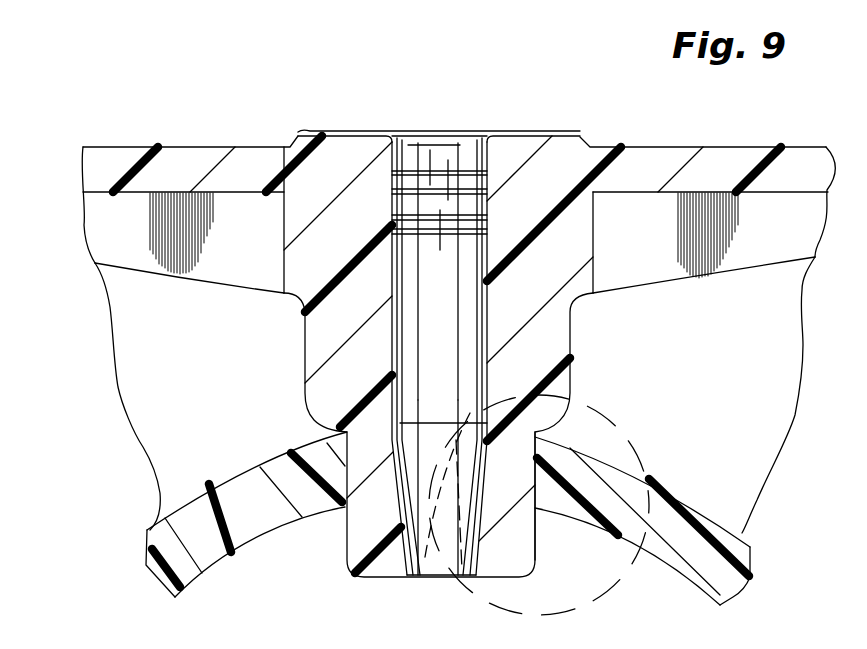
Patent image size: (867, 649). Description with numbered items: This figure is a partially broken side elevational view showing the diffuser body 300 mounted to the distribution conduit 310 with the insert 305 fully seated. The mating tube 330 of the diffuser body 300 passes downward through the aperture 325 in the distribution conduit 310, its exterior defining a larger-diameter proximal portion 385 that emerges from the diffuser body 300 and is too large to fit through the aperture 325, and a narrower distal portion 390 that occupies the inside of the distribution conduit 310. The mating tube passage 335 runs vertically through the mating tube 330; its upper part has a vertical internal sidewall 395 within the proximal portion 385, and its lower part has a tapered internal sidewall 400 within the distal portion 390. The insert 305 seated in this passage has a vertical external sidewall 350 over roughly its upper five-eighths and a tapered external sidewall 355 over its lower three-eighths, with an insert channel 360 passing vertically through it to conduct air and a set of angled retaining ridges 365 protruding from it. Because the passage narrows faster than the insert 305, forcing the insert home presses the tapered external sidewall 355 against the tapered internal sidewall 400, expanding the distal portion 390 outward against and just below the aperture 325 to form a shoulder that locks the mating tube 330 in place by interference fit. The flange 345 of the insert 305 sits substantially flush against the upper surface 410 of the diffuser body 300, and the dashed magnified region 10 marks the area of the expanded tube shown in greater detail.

The magnified region 10 is at (628, 580).
The diffuser body 300 is at (195, 132).
The insert 305 is at (485, 108).
The distribution conduit 310 is at (712, 484).
The aperture 325 is at (536, 513).
The mating tube 330 is at (588, 362).
The mating tube passage 335 is at (392, 352).
The flange 345 is at (318, 129).
The vertical external sidewall 350 is at (458, 382).
The tapered external sidewall 355 is at (460, 547).
The insert channel 360 is at (430, 122).
The retaining ridges 365 is at (498, 213).
The proximal portion 385 is at (541, 366).
The distal portion 390 is at (519, 565).
The vertical internal sidewall 395 is at (398, 271).
The tapered internal sidewall 400 is at (412, 497).
The upper surface 410 is at (518, 134).